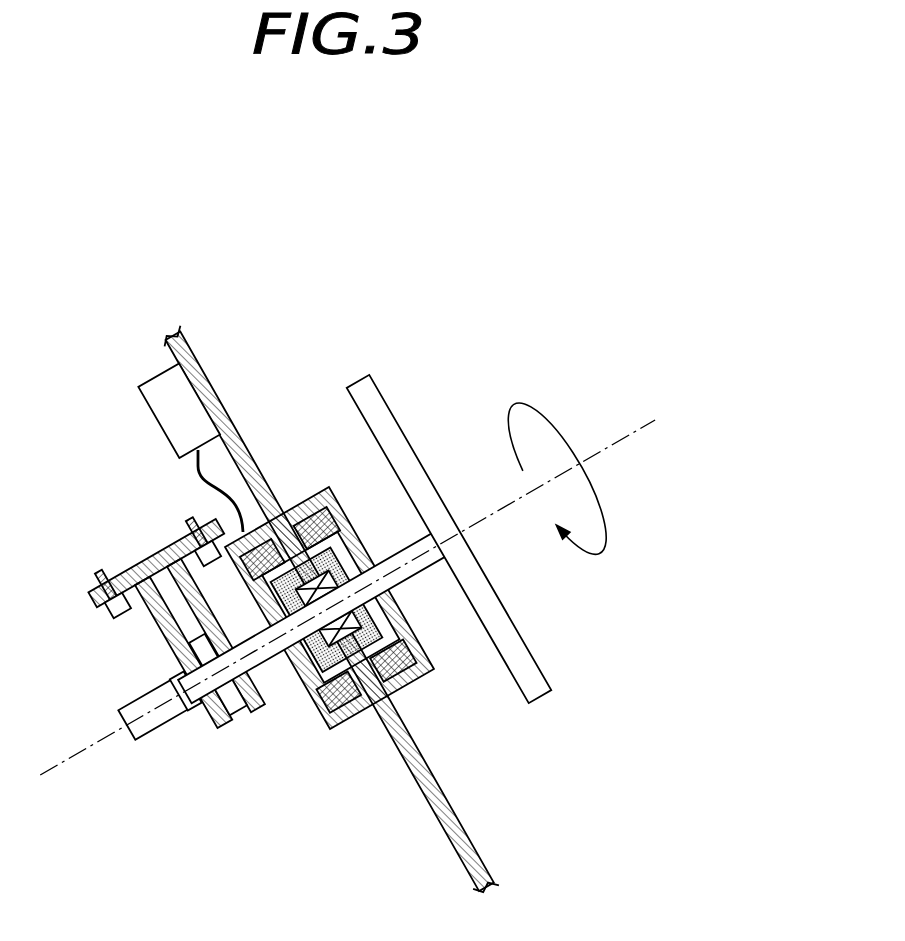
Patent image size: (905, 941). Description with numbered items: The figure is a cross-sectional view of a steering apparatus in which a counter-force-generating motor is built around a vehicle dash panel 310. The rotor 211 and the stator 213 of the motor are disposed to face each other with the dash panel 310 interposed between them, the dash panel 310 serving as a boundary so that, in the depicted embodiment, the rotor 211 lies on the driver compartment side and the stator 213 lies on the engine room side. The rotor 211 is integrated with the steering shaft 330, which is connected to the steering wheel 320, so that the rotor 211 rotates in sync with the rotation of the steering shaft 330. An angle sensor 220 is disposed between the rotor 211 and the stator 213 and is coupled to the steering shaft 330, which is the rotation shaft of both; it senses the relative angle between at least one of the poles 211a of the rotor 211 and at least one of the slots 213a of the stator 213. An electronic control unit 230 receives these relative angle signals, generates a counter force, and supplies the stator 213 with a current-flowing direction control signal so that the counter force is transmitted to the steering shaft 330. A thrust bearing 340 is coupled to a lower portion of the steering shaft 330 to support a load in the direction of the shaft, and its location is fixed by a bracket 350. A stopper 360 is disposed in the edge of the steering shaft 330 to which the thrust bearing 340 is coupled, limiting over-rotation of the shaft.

The dash panel 310 is at (170, 336).
The steering wheel 320 is at (357, 380).
The steering shaft 330 is at (413, 570).
The thrust bearing 340 is at (233, 705).
The bracket 350 is at (148, 585).
The stopper 360 is at (128, 703).
The electronic control unit 230 is at (160, 426).
The angle sensor 220 is at (401, 616).
The rotor 211 is at (407, 622).
The pole 211a is at (413, 680).
The stator 213 is at (290, 687).
The slot 213a is at (343, 713).